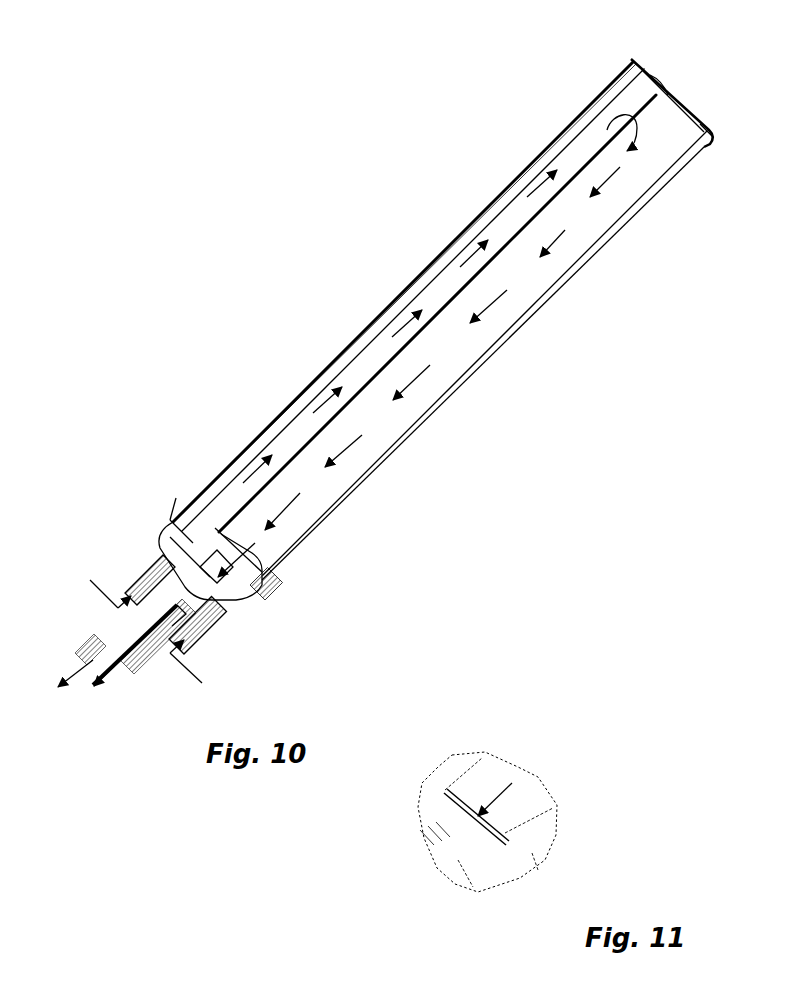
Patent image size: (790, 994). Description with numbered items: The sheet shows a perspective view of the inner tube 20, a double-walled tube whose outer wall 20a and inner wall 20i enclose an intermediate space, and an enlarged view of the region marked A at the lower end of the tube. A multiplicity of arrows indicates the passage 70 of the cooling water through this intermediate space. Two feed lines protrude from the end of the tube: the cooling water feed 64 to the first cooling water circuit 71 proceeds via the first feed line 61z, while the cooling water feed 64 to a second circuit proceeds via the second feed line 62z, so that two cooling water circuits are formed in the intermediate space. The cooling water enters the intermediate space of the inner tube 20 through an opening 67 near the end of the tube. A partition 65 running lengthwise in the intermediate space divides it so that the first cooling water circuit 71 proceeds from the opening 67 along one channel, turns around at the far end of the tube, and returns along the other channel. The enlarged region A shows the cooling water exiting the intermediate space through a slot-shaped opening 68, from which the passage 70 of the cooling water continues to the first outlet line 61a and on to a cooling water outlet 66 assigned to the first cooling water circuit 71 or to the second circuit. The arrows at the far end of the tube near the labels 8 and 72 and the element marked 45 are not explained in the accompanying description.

In FIG. 10, the tube inlet opening 8 is at (671, 97).
In FIG. 10, the tube end portion 72 is at (743, 63).
In FIG. 10, the passage of the cooling water 70 is at (530, 192).
In FIG. 11, the passage of the cooling water 70 is at (508, 793).
In FIG. 10, the inner tube 20 is at (431, 253).
In FIG. 10, the first cooling water circuit 71 is at (423, 287).
In FIG. 10, the inner wall 20i is at (543, 297).
In FIG. 10, the outer wall 20a is at (440, 407).
In FIG. 10, the partition 65 is at (314, 437).
In FIG. 10, the opening 67 is at (176, 498).
In FIG. 10, the first feed line 61z is at (160, 570).
In FIG. 10, the second feed line 62z is at (212, 621).
In FIG. 10, the cooling water feed 64 is at (105, 592).
In FIG. 10, the region A is at (225, 583).
In FIG. 10, the coupling 45 is at (118, 638).
In FIG. 10, the cooling water outlet 66 is at (73, 682).
In FIG. 10, the first outlet line 61a is at (172, 653).
In FIG. 11, the slot-shaped opening 68 is at (507, 838).